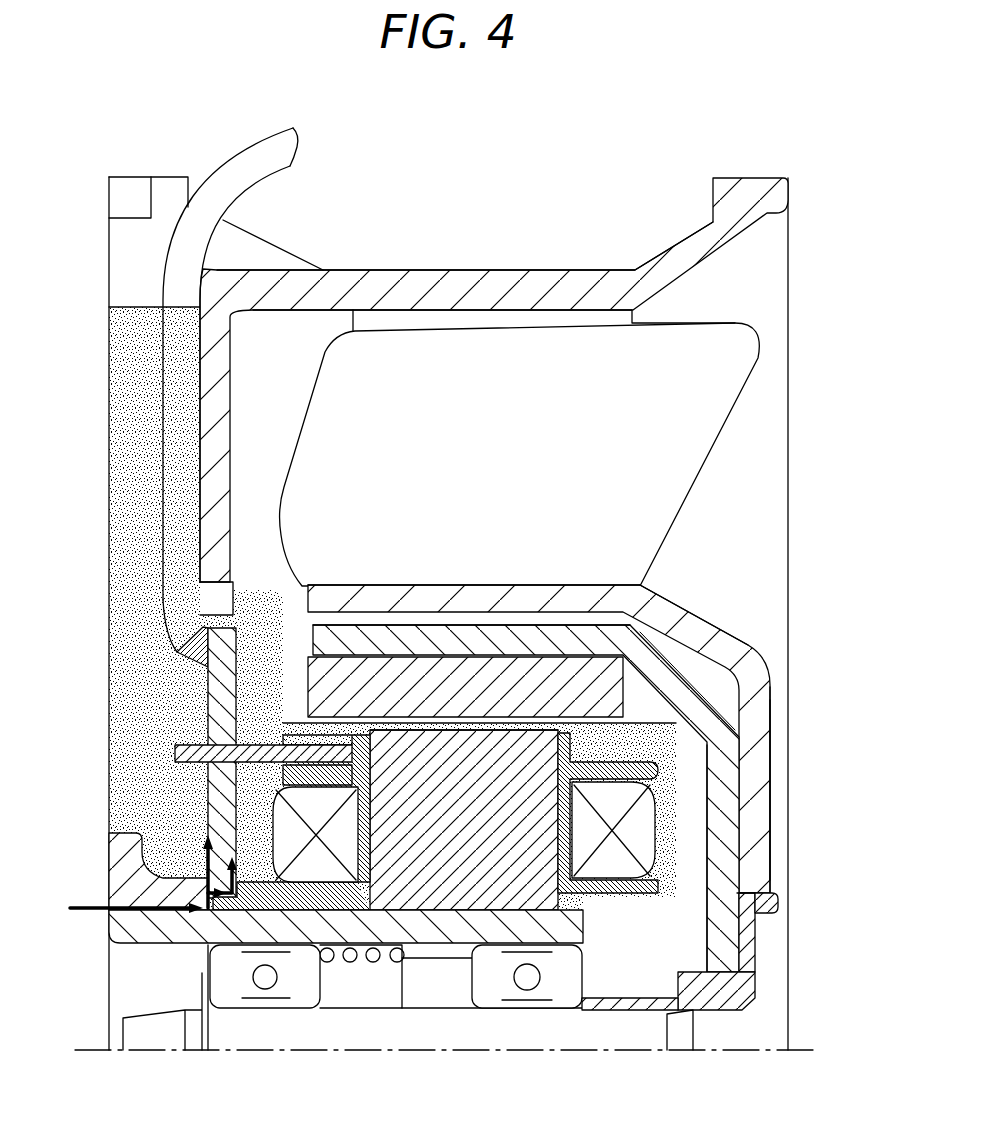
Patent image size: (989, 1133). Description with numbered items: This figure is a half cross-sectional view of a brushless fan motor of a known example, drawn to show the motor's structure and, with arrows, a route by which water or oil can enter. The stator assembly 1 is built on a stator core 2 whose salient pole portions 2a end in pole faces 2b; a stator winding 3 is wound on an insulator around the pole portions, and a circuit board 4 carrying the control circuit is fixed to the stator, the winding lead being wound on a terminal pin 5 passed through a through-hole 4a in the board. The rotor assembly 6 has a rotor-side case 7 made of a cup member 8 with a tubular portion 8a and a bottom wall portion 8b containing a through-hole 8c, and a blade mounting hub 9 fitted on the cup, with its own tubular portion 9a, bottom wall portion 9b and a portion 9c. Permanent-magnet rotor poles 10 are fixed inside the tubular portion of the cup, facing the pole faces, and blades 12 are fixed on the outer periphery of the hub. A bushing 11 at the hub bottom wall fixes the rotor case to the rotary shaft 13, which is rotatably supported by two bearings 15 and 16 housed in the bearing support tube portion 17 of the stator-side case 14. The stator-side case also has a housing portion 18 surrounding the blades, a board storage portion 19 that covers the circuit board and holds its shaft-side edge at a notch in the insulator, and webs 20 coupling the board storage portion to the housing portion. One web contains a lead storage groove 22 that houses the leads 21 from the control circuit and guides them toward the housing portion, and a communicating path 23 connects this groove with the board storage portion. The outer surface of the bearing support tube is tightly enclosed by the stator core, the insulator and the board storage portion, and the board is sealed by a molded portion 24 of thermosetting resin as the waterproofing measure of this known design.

The stator assembly 1 is at (167, 720).
The stator core 2 is at (447, 880).
The salient pole portion 2a is at (540, 750).
The pole face 2b is at (525, 722).
The stator winding 3 is at (288, 820).
The circuit board 4 is at (223, 697).
The through-hole 4a is at (178, 750).
The terminal pin 5 is at (263, 762).
The rotor assembly 6 is at (708, 628).
The rotor-side case 7 is at (773, 843).
The cup member 8 is at (697, 702).
The tubular portion 8a is at (440, 640).
The bottom wall portion 8b is at (733, 870).
The through-hole 8c is at (717, 1006).
The blade mounting hub 9 is at (758, 742).
The tubular portion 9a is at (388, 598).
The bottom wall portion 9b is at (758, 772).
The outer bracket lip 9c is at (762, 913).
The rotor pole 10 is at (500, 690).
The bushing 11 is at (720, 1000).
The blade 12 is at (548, 365).
The rotary shaft 13 is at (585, 1037).
The stator-side case 14 is at (150, 165).
The bearing 15 is at (232, 995).
The bearing 16 is at (495, 995).
The bearing support tube portion 17 is at (155, 935).
The housing portion 18 is at (390, 287).
The board storage portion 19 is at (117, 868).
The web 20 is at (210, 380).
The lead 21 is at (188, 243).
The lead storage groove 22 is at (140, 283).
The communicating path 23 is at (203, 627).
The molded portion 24 is at (143, 473).